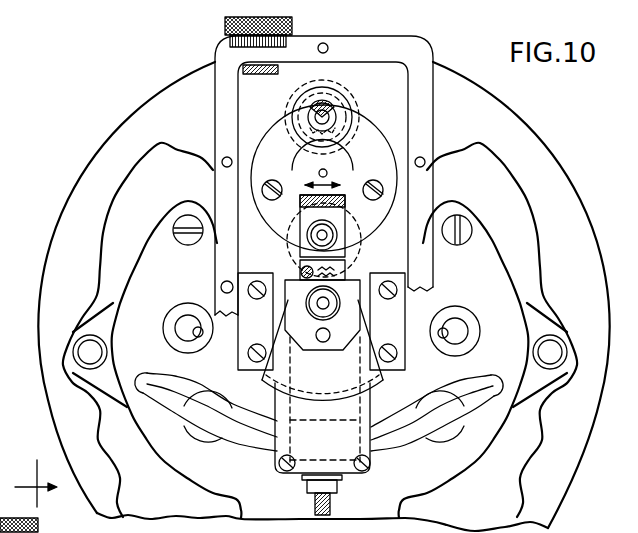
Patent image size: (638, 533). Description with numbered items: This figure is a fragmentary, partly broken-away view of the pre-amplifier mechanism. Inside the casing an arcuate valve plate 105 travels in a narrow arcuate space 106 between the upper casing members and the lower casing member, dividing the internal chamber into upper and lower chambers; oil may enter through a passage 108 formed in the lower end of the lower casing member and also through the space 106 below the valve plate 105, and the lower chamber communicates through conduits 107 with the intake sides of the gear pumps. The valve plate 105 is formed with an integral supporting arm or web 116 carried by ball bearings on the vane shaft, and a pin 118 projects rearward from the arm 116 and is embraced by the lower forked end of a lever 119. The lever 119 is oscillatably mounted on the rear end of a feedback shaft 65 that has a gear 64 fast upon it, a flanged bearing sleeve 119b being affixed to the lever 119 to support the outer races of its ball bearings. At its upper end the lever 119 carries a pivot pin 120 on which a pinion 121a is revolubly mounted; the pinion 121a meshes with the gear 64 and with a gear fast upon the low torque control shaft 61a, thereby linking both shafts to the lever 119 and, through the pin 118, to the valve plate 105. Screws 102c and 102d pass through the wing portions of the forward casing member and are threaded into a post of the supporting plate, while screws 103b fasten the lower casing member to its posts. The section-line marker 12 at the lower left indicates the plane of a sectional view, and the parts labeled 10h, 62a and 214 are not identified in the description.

The bracket 10h is at (290, 150).
The ratchet wheel 62a is at (312, 100).
The low torque control shaft 61a is at (333, 110).
The pinion 121a is at (345, 152).
The pivot pin 120 is at (328, 172).
The lever 119 is at (347, 183).
The flanged bearing sleeve 119b is at (300, 222).
The friction pad 64 is at (308, 210).
The bearing 65 is at (337, 232).
The supporting arm 116 is at (348, 348).
The pin 118 is at (323, 342).
The screw 102c is at (272, 268).
The screw 102d is at (248, 356).
The passage 108 is at (325, 462).
The cross bar 214 is at (369, 461).
The screw 103b is at (288, 472).
The conduit 107 is at (230, 452).
The arcuate valve plate 105 is at (272, 388).
The arcuate space 106 is at (410, 395).
The section line 12- 12 is at (28, 496).